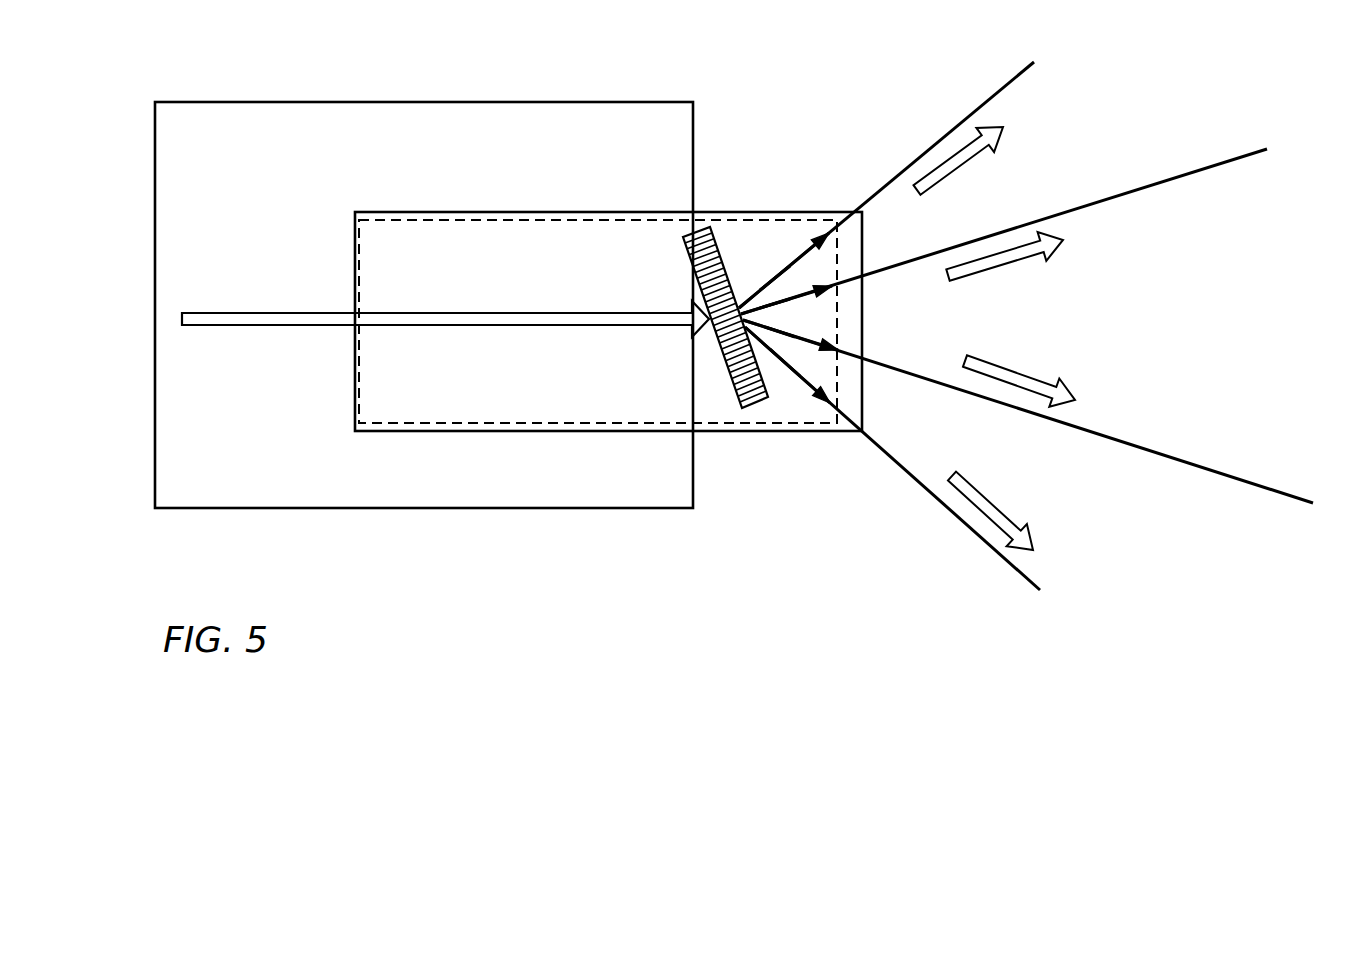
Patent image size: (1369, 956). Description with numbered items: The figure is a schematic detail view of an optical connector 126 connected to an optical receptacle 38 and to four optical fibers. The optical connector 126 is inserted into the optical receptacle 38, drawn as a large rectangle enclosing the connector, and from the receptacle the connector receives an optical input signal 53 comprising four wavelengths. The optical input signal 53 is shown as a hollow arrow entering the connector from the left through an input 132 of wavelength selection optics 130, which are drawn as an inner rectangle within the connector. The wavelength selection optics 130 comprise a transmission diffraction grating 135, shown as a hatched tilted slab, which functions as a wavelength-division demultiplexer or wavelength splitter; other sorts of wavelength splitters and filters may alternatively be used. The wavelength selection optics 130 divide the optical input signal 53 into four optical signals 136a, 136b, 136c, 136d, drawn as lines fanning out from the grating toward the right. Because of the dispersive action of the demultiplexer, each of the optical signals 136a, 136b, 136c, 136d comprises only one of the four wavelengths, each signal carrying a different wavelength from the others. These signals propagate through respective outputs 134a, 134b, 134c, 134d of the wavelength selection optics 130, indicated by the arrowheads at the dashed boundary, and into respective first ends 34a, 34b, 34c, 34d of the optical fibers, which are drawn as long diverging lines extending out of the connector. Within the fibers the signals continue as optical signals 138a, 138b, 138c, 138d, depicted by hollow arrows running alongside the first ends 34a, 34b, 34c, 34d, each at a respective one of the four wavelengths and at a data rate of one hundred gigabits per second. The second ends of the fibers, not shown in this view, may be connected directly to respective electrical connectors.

The optical receptacle 38 is at (520, 101).
The wavelength selection optics 130 is at (448, 212).
The optical connector 126 is at (502, 433).
The input 132 is at (352, 313).
The optical input signal 53 is at (228, 330).
The transmission diffraction grating 135 is at (723, 260).
The first output 134a is at (827, 223).
The second output 134b is at (840, 284).
The third output 134c is at (840, 353).
The fourth output 134d is at (833, 395).
The first optical signal 136a is at (778, 278).
The second optical signal 136b is at (776, 330).
The third optical signal 136c is at (790, 345).
The fourth optical signal 136d is at (800, 380).
The first end of first optical fiber 34a is at (978, 103).
The first end of second optical fiber 34b is at (1043, 218).
The first end of third optical fiber 34c is at (1187, 465).
The first end of fourth optical fiber 34d is at (985, 543).
The first fiber optical signal 138a is at (979, 157).
The second fiber optical signal 138b is at (1062, 257).
The third fiber optical signal 138c is at (1077, 402).
The fourth fiber optical signal 138d is at (1035, 548).